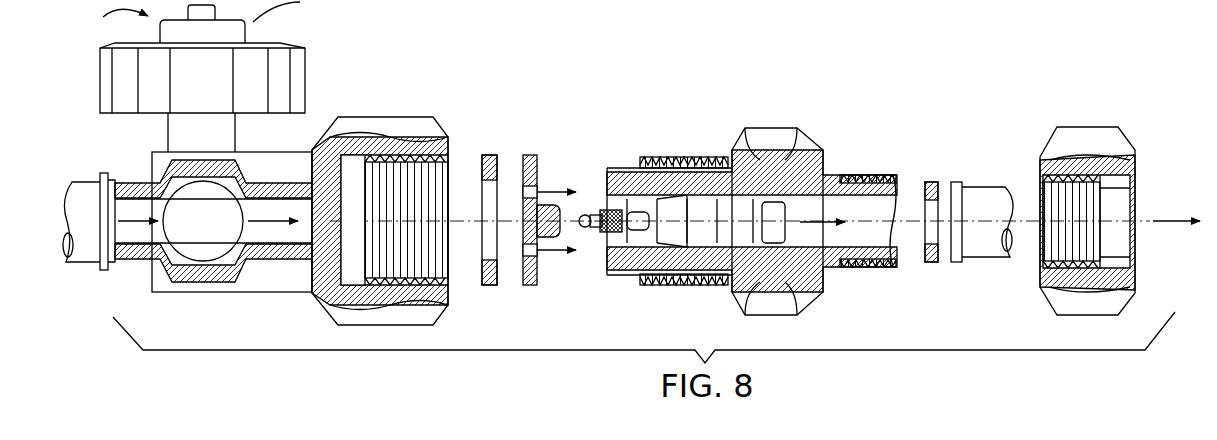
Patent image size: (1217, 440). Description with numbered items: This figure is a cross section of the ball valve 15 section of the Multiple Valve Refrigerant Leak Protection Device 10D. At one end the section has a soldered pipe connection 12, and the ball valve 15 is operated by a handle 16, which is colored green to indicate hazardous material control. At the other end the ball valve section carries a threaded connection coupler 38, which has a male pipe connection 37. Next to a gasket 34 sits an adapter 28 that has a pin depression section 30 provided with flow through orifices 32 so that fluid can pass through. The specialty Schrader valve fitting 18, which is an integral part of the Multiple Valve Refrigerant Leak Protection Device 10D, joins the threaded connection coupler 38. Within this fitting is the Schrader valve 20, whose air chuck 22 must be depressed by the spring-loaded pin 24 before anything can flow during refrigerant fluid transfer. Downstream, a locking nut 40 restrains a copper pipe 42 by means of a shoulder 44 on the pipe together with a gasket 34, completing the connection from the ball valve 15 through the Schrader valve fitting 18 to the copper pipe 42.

The Multiple Valve Refrigerant Leak Protection Device 10D is at (395, 58).
The soldered pipe connection 12 is at (78, 195).
The ball valve 15 is at (212, 253).
The handle 16 is at (108, 75).
The specialty Schrader valve fitting 18 is at (798, 147).
The Schrader valve 20 is at (740, 213).
The air chuck 22 is at (707, 218).
The spring-loaded pin 24 is at (583, 210).
The adapter 28 is at (530, 150).
The pin depression section 30 is at (563, 235).
The flow through orifices 32 is at (538, 185).
The gasket 34 is at (485, 152).
The male pipe connection 37 is at (867, 178).
The threaded connection coupler 38 is at (420, 117).
The locking nut 40 is at (1080, 147).
The copper pipe 42 is at (993, 203).
The shoulder 44 is at (957, 264).